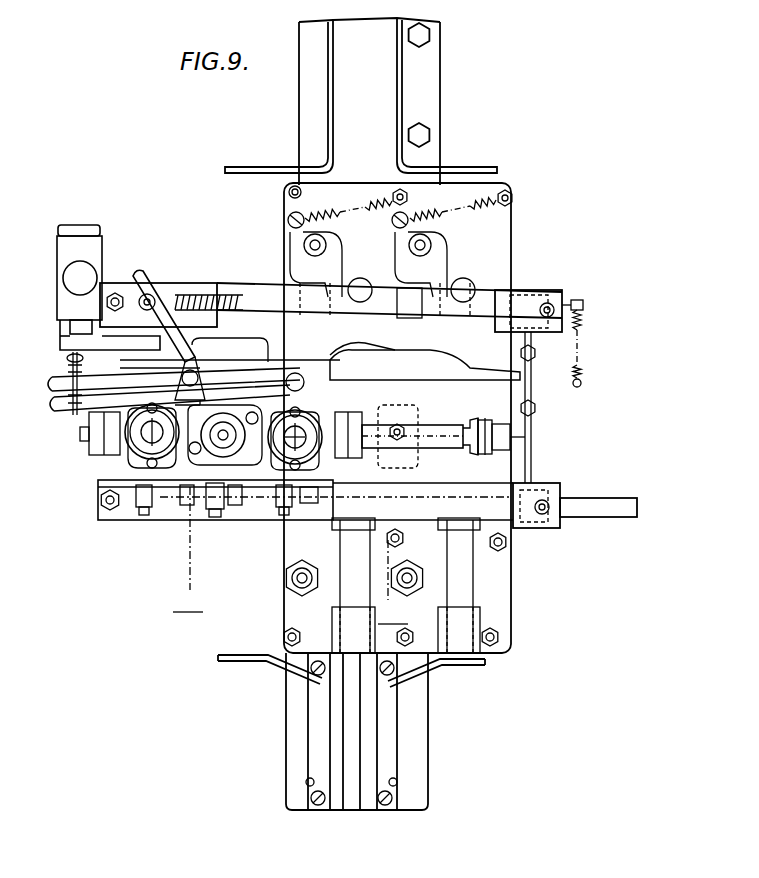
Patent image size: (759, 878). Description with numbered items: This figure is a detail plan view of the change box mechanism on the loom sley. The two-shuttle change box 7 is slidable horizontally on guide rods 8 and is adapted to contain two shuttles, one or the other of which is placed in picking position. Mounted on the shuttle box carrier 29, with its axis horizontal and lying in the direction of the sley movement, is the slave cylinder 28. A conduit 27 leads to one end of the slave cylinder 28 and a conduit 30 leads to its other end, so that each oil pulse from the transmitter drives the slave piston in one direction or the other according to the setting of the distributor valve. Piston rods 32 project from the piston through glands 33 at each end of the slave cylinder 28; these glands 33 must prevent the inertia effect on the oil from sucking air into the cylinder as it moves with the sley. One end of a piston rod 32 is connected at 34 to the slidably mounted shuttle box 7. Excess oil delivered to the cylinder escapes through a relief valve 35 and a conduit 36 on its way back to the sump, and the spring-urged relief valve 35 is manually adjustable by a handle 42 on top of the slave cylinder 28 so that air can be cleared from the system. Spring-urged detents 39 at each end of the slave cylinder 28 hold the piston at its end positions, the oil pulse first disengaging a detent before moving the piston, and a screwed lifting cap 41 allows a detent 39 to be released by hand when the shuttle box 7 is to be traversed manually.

The two-shuttle change box 7 is at (497, 590).
The guide rods 8 is at (487, 307).
The conduit 27 is at (75, 375).
The slave cylinder 28 is at (130, 450).
The shuttle box carrier 29 is at (125, 514).
The conduit 30 is at (92, 408).
The piston rods 32 is at (80, 434).
The glands 33 is at (102, 446).
The connection 34 is at (500, 443).
The relief valve 35 is at (228, 478).
The conduit 36 is at (140, 276).
The spring-urged detents 39 is at (300, 436).
The screwed lifting cap 41 is at (145, 508).
The handle 42 is at (214, 482).